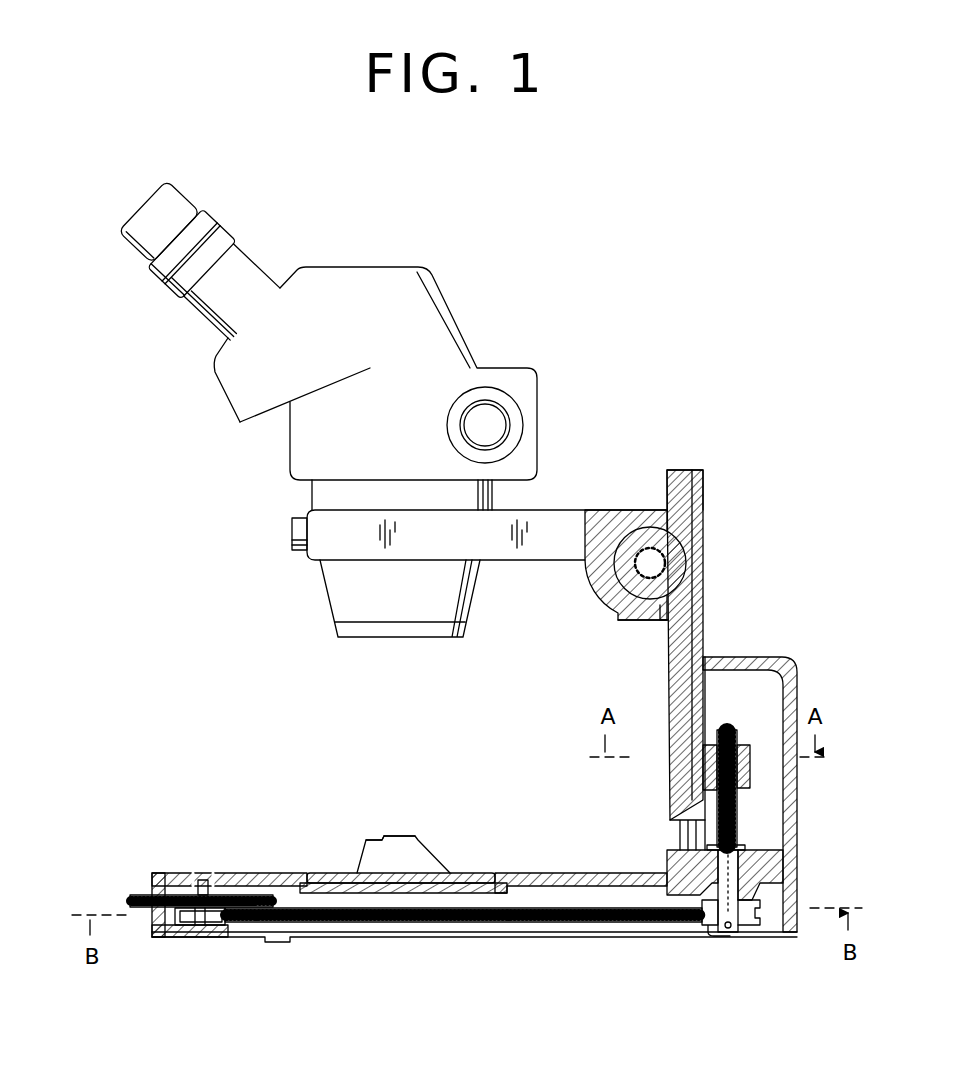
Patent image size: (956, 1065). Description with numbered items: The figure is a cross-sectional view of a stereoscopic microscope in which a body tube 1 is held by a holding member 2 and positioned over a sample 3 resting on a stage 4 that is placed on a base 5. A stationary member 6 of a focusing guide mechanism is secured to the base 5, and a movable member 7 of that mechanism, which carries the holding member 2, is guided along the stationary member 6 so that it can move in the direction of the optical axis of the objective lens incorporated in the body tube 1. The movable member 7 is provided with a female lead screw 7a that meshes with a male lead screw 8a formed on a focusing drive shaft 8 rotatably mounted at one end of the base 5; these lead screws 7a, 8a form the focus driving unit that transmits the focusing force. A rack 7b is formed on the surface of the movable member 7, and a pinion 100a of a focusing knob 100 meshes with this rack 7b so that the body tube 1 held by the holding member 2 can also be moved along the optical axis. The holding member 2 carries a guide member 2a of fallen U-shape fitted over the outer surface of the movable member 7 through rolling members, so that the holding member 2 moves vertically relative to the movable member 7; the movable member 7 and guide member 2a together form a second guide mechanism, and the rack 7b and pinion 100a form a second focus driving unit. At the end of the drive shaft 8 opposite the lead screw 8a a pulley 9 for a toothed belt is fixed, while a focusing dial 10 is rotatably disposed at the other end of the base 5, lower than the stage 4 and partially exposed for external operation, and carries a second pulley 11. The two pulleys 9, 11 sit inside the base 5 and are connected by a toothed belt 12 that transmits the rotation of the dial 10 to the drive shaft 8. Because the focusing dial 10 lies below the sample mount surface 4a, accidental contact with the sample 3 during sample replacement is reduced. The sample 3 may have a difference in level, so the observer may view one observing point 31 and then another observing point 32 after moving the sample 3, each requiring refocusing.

The body tube 1 is at (308, 445).
The holding member 2 is at (563, 538).
The guide member 2a is at (663, 618).
The sample 3 is at (418, 840).
The observing point 31 is at (400, 836).
The observing point 32 is at (375, 838).
The stage 4 is at (492, 873).
The sample mount surface 4a is at (463, 872).
The base 5 is at (584, 872).
The stationary member 6 is at (676, 834).
The movable member 7 is at (670, 680).
The female lead screw 7a is at (752, 757).
The rack 7b is at (665, 487).
The focusing drive shaft 8 is at (725, 870).
The male lead screw 8a is at (748, 742).
The pulley 9 is at (702, 930).
The focusing dial 10 is at (130, 897).
The pulley 11 is at (198, 925).
The toothed belt 12 is at (460, 922).
The focusing knob 100 is at (630, 508).
The pinion 100a is at (648, 535).